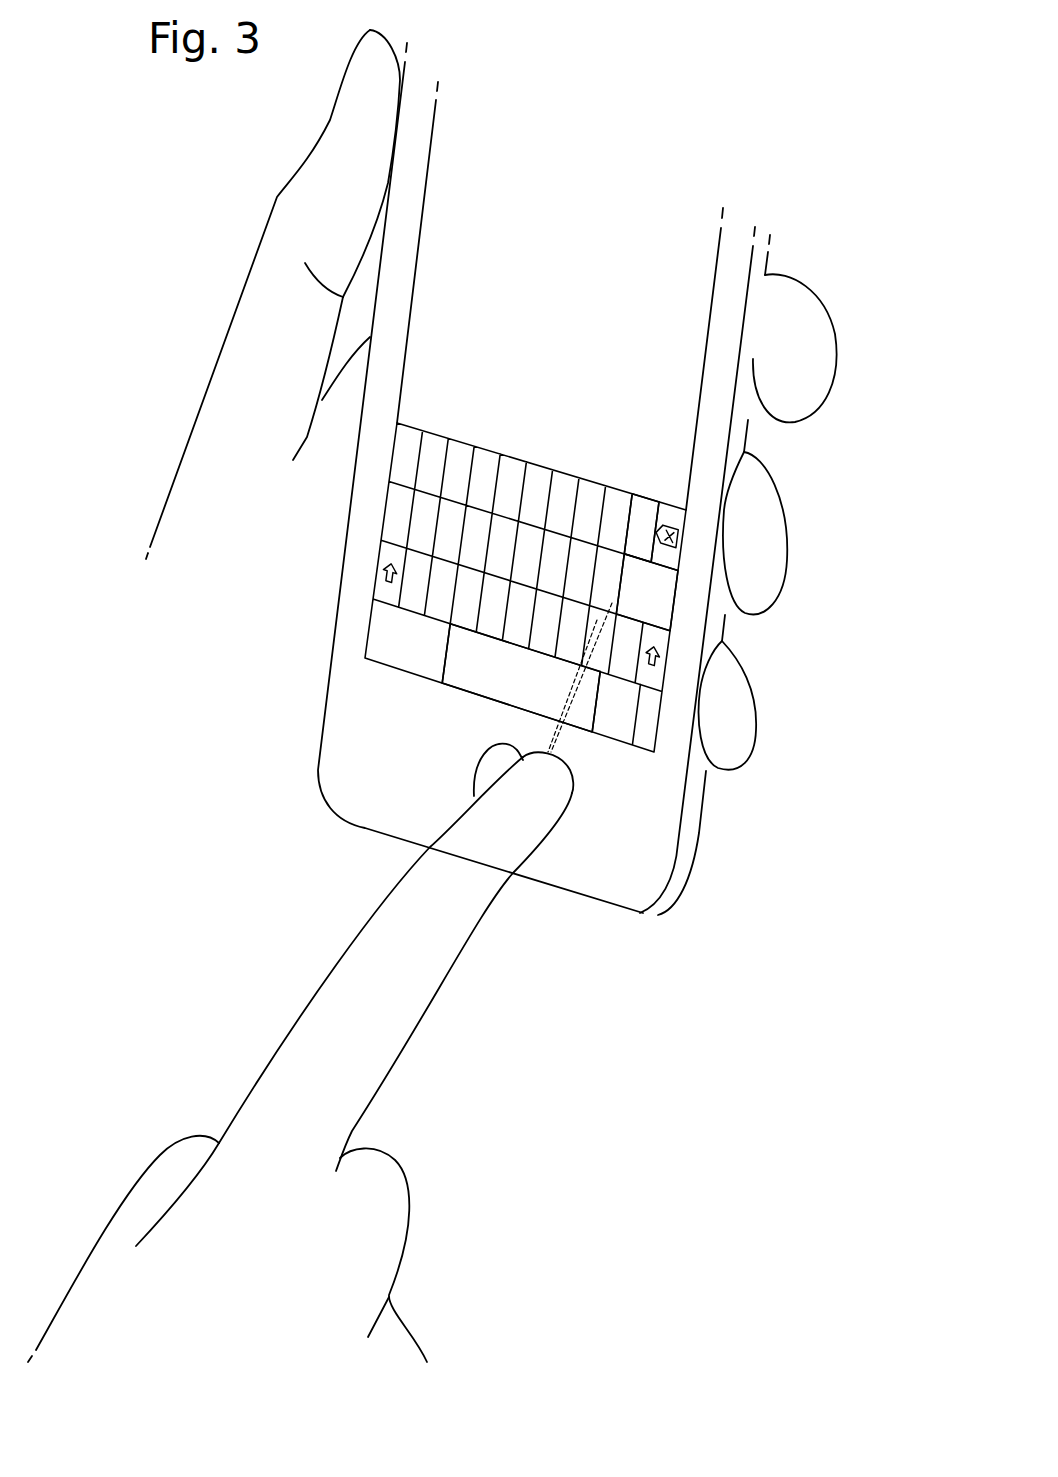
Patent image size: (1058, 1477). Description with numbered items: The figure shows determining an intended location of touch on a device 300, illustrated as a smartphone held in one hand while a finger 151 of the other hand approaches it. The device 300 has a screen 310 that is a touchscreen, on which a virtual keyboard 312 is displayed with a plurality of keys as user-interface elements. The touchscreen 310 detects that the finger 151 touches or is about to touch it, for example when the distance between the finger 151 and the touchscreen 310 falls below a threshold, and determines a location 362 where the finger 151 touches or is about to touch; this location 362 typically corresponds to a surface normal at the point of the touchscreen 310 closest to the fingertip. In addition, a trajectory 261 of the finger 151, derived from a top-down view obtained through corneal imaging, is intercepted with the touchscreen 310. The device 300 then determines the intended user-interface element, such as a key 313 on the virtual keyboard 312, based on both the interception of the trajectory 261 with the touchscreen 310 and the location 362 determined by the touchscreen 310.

The device 300 is at (790, 215).
The screen 310 is at (645, 338).
The virtual keyboard 312 is at (622, 500).
The key 313 is at (630, 575).
The location 362 is at (573, 697).
The trajectory 261 is at (573, 697).
The finger 151 is at (438, 922).